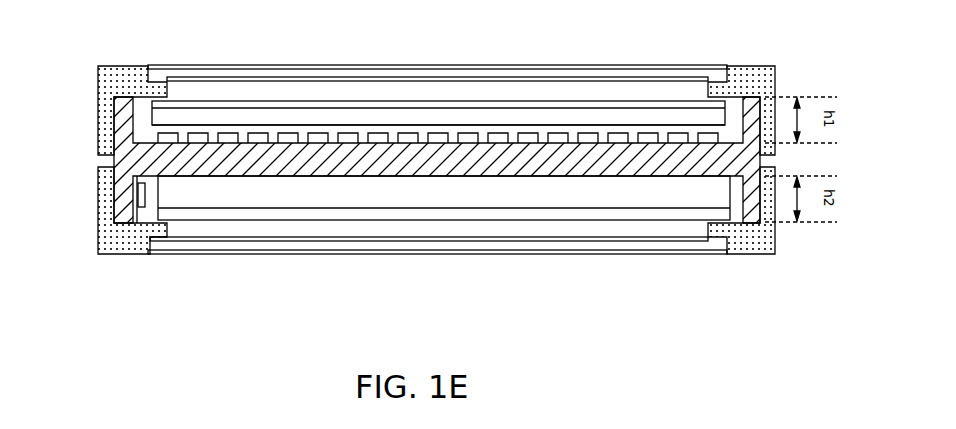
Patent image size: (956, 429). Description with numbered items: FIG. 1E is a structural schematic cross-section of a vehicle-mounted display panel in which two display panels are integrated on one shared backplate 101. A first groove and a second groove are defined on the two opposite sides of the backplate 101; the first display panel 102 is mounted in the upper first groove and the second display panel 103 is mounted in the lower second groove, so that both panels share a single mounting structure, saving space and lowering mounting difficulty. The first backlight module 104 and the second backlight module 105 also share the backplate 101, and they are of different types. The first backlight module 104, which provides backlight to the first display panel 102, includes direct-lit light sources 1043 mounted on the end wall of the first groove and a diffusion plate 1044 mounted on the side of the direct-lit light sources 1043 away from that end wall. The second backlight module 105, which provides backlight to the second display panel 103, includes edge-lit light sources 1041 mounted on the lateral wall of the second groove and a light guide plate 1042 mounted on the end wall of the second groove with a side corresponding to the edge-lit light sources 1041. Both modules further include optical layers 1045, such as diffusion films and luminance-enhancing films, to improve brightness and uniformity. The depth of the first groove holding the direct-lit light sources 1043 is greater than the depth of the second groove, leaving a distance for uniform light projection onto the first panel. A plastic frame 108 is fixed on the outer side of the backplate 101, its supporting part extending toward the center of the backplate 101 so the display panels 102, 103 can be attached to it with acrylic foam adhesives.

The backplate 101 is at (115, 160).
The first display panel 102 is at (430, 71).
The second display panel 103 is at (374, 257).
The first backlight module 104 is at (441, 145).
The second backlight module 105 is at (433, 245).
The plastic frame 108 is at (128, 88).
The edge-lit light sources 1041 is at (165, 228).
The light guide plate 1042 is at (214, 193).
The direct-lit light sources 1043 is at (353, 26).
The diffusion plate 1044 is at (280, 118).
The optical layers 1045 is at (332, 107).